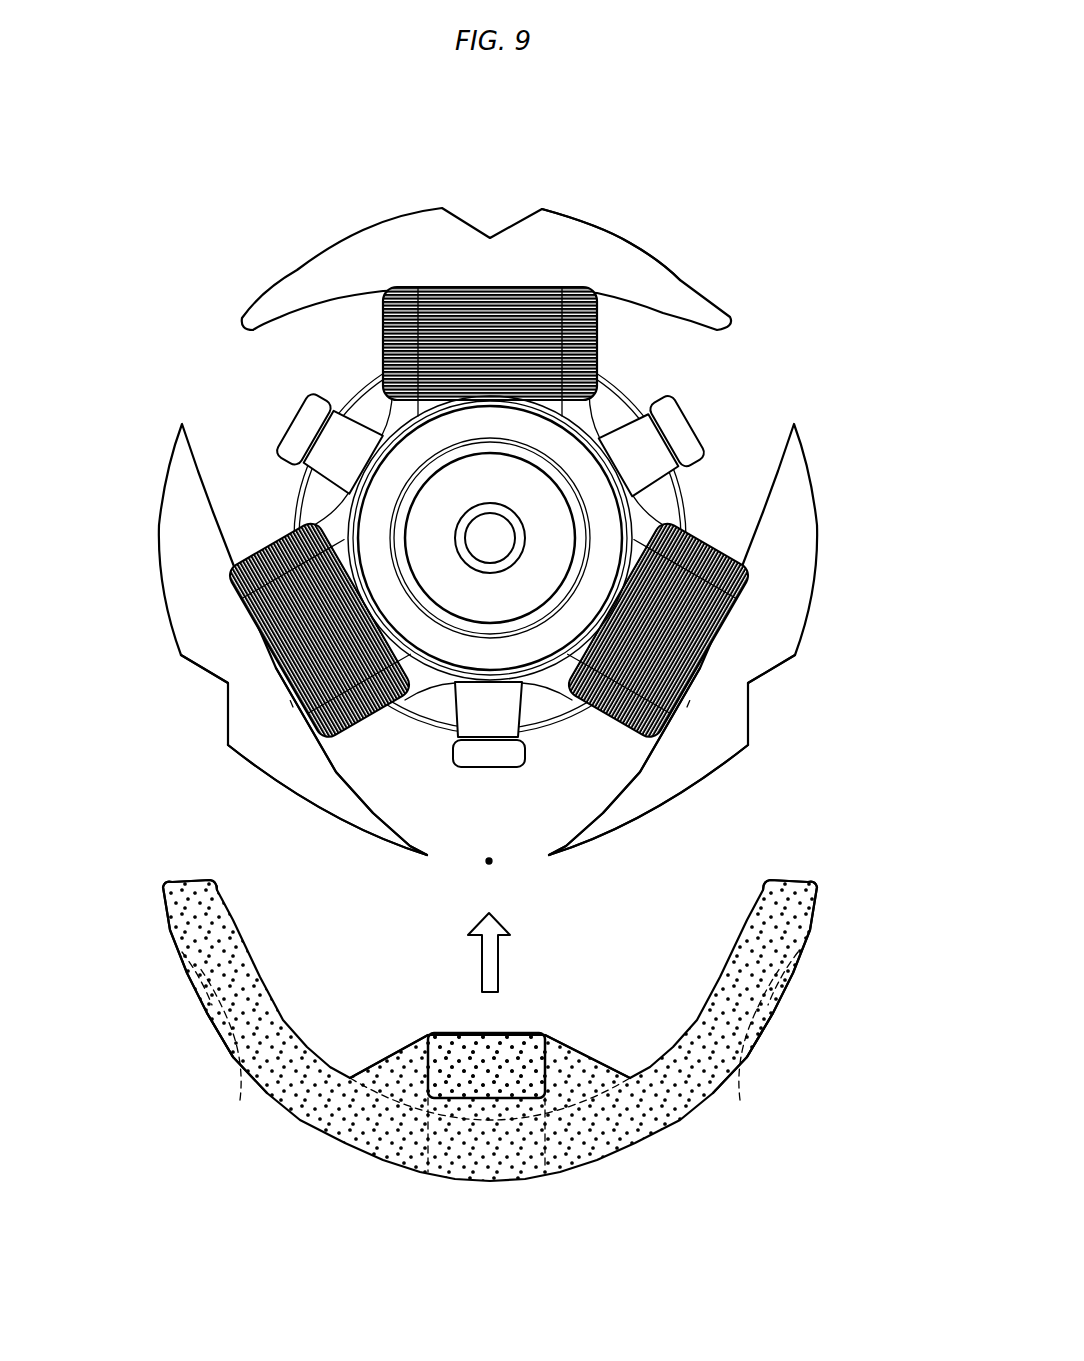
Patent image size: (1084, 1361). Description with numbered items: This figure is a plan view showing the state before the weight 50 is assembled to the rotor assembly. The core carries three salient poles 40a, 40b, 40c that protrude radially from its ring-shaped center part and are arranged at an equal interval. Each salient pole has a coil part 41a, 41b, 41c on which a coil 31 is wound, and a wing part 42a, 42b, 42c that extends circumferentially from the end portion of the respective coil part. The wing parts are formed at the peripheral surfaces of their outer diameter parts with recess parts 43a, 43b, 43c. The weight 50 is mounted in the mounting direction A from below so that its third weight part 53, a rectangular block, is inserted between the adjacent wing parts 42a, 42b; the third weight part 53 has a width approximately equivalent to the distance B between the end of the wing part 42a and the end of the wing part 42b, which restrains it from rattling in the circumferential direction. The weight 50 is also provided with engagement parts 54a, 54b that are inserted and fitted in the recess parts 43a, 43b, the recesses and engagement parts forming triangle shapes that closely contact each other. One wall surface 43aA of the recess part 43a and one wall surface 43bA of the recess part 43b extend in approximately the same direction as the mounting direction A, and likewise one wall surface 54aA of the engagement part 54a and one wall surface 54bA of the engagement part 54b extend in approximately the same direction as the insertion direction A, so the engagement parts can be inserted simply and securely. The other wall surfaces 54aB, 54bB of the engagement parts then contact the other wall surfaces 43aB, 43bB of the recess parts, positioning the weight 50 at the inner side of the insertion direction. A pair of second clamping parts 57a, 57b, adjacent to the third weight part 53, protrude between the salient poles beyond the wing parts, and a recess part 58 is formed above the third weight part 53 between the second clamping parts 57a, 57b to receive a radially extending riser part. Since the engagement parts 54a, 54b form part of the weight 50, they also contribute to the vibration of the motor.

The coils 31 is at (597, 333).
The salient pole 40a is at (320, 783).
The salient pole 40b is at (673, 776).
The salient pole 40c is at (635, 220).
The coil part 41a is at (293, 707).
The coil part 41b is at (687, 707).
The coil part 41c is at (580, 239).
The wing part 42a is at (332, 810).
The wing part 42b is at (653, 810).
The wing part 42c is at (687, 280).
The recess part 43a is at (208, 699).
The wall surface 43aA is at (227, 727).
The wall surface 43aB is at (203, 676).
The recess part 43b is at (770, 702).
The wall surface 43bA is at (752, 737).
The wall surface 43bB is at (772, 680).
The recess part 43c is at (493, 207).
The weight 50 is at (491, 1087).
The third weight part 53 is at (507, 1182).
The engagement part 54a is at (200, 1005).
The wall surface 54aA is at (240, 1060).
The wall surface 54aB is at (177, 950).
The engagement part 54b is at (775, 998).
The wall surface 54bA is at (733, 1057).
The wall surface 54bB is at (800, 950).
The second clamping part 57a is at (570, 1075).
The second clamping part 57b is at (398, 1070).
The recess part 58 is at (455, 1047).
The mounting direction A is at (498, 965).
The distance B is at (490, 858).